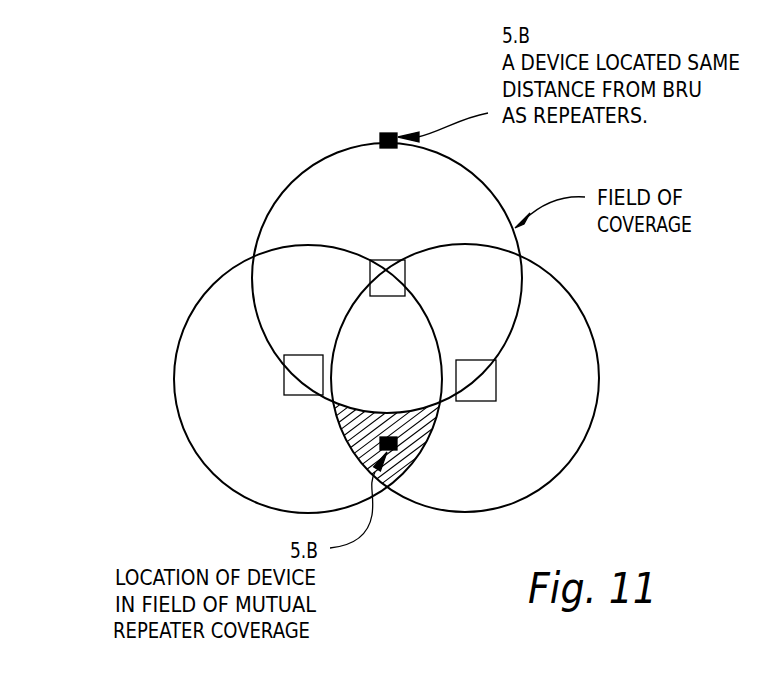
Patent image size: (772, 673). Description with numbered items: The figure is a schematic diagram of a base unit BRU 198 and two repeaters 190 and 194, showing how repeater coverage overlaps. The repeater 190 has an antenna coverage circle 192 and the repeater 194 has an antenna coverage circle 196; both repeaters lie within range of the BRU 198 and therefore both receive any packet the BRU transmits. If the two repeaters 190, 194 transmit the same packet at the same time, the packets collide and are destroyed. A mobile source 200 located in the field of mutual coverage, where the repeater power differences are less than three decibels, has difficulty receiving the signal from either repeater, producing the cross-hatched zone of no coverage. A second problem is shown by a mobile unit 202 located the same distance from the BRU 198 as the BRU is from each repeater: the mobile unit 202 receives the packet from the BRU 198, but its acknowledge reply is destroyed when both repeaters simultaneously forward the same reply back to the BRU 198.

The repeater 190 is at (496, 374).
The antenna coverage circle 192 is at (583, 448).
The repeater 194 is at (285, 381).
The antenna coverage circle 196 is at (207, 473).
The base unit BRU 198 is at (395, 262).
The mobile source 200 is at (397, 445).
The mobile unit 202 is at (380, 138).